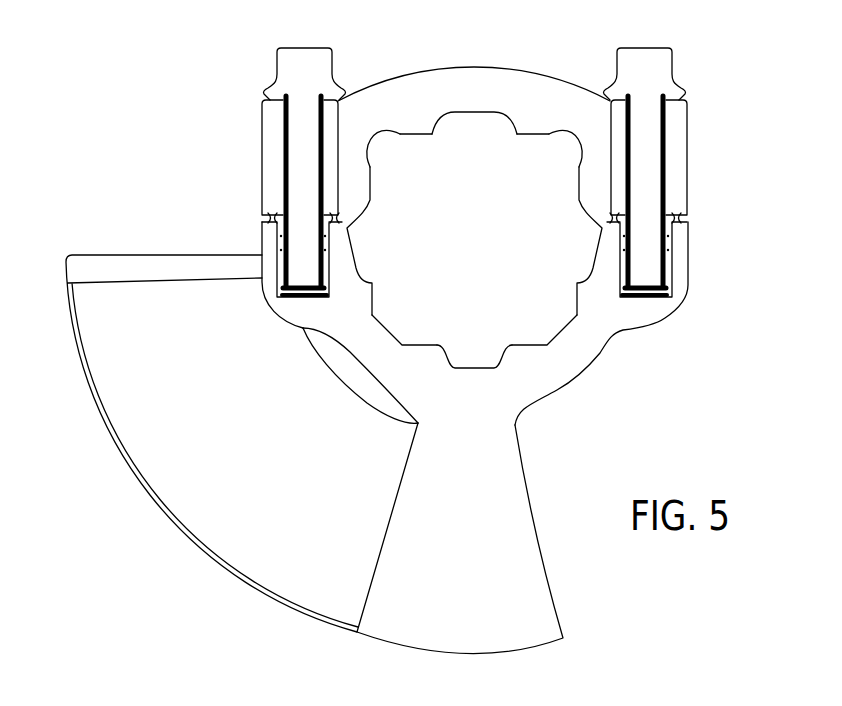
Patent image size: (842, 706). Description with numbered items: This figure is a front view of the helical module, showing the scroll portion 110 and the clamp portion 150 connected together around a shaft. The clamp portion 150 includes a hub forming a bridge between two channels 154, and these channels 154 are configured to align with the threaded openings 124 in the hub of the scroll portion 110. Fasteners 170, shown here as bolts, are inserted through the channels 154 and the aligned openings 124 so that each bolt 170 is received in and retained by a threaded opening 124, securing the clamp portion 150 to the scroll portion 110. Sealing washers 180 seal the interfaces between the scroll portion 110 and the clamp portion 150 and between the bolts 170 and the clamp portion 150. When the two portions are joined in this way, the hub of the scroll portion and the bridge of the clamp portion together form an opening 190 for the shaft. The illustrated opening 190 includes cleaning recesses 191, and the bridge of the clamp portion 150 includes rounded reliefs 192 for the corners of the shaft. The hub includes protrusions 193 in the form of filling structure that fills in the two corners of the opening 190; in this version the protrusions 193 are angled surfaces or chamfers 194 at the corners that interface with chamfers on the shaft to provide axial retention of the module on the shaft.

The scroll portion 110 is at (210, 247).
The threaded openings 124 is at (677, 250).
The clamp portion 150 is at (475, 149).
The channels 154 is at (670, 158).
The fasteners 170 is at (303, 65).
The sealing washers 180 is at (695, 95).
The opening 190 is at (525, 221).
The cleaning recesses 191 is at (465, 122).
The rounded reliefs 192 is at (375, 142).
The protrusions 193 is at (376, 344).
The chamfers 194 is at (578, 347).